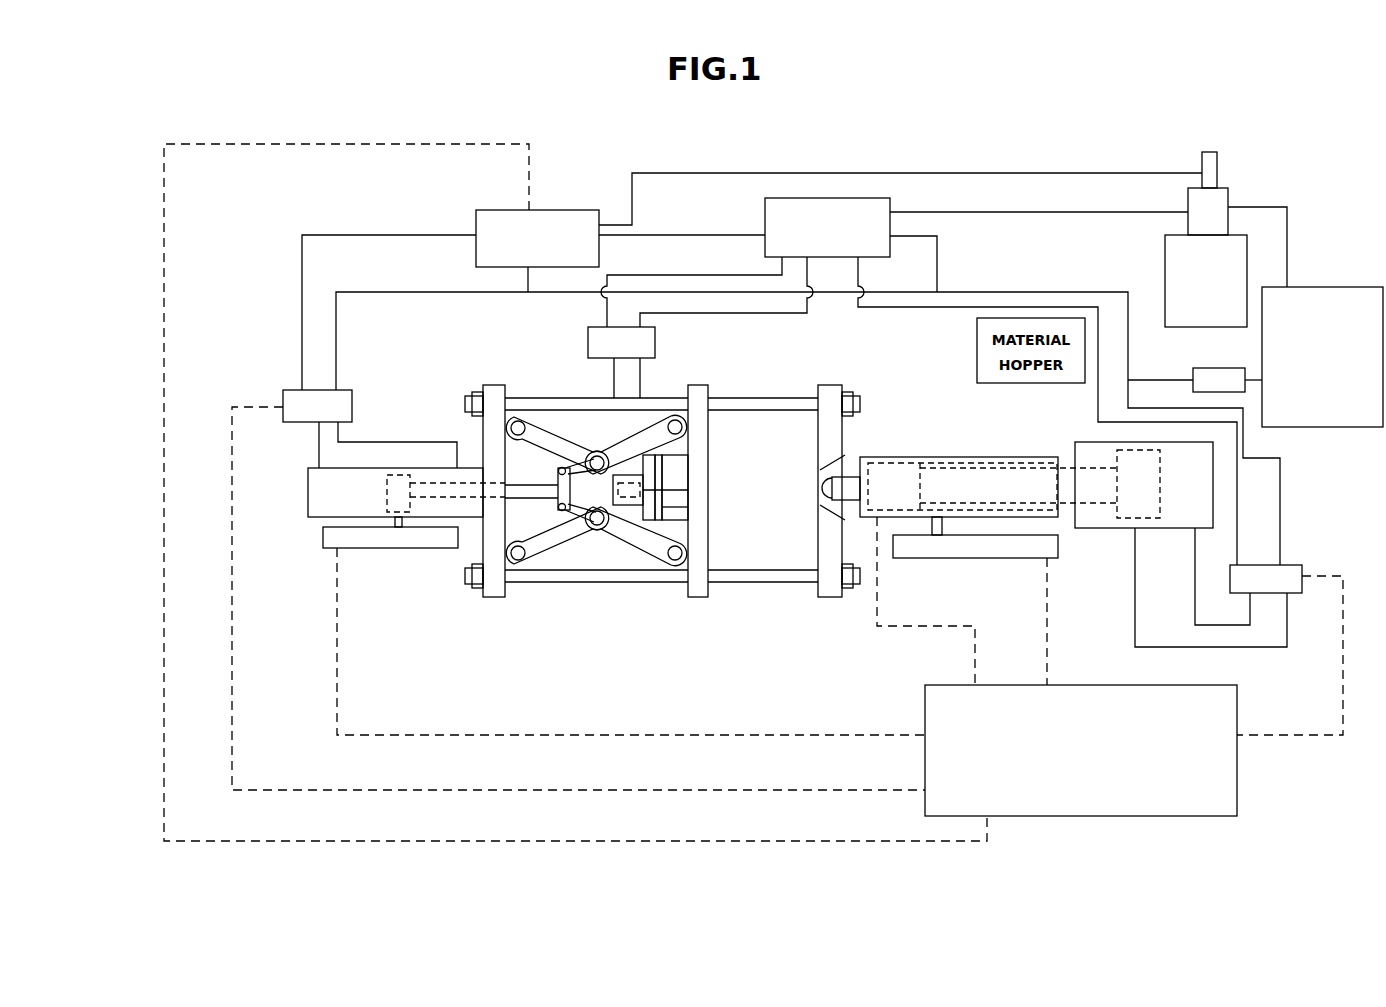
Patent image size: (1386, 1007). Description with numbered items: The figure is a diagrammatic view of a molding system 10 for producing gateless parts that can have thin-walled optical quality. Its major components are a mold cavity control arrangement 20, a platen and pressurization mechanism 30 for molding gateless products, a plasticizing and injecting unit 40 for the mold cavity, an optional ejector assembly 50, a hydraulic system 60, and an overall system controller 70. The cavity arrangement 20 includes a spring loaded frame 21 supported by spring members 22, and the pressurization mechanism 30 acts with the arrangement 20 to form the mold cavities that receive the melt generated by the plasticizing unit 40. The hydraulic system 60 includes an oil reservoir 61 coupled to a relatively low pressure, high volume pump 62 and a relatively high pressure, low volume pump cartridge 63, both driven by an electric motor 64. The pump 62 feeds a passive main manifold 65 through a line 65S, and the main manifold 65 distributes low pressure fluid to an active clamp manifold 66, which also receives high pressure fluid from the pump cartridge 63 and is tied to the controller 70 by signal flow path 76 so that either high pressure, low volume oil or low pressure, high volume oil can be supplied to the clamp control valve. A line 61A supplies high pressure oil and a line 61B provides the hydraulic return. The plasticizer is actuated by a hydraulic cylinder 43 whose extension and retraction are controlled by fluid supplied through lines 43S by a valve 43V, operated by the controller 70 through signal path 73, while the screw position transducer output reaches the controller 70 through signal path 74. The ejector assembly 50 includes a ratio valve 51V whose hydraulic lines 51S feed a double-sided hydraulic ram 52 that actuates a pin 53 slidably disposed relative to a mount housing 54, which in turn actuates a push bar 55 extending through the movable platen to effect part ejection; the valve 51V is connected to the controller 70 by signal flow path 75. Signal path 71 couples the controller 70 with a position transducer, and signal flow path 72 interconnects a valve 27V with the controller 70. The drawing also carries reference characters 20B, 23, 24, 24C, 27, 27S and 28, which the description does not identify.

The molding system 10 is at (197, 128).
The signal flow path 76 is at (160, 244).
The active manifold 66 is at (489, 208).
The passive manifold 65 is at (762, 217).
The line 65S is at (1046, 207).
The line 61A is at (348, 236).
The line 61B is at (420, 294).
The hydraulic system 60 is at (1270, 112).
The pump cartridge 63 is at (1197, 152).
The pump 62 is at (1230, 197).
The electric motor 64 is at (1163, 264).
The oil reservoir 61 is at (1305, 431).
The valve 27V is at (320, 388).
The ejector supply lines 27S is at (380, 440).
The ejector cylinder 27 is at (306, 496).
The ejector base 28 is at (440, 552).
The ratio valve 51V is at (586, 343).
The hydraulic lines 51S is at (610, 379).
The mold cavity control arrangement 20 is at (635, 542).
The tie bars 20B is at (600, 586).
The rear platen 23 is at (490, 600).
The spring members 22 is at (700, 600).
The spring loaded frame 21 is at (835, 600).
The toggle links 24 is at (605, 533).
The crosshead 24C is at (556, 508).
The double-sided hydraulic ram 52 is at (627, 468).
The ejector assembly 50 is at (602, 487).
The push bar 55 is at (674, 474).
The pin 53 is at (692, 488).
The mount housing 54 is at (666, 506).
The platen and pressurization mechanism 30 is at (778, 475).
The plasticizing and injecting unit 40 is at (953, 585).
The signal path 74 is at (1042, 593).
The signal flow path 75 is at (920, 630).
The hydraulic cylinder 43 is at (1178, 530).
The lines 43S is at (1190, 626).
The valve 43V is at (1290, 562).
The signal path 73 is at (1340, 655).
The controller 70 is at (1170, 818).
The signal path 71 is at (698, 733).
The signal flow path 72 is at (526, 788).